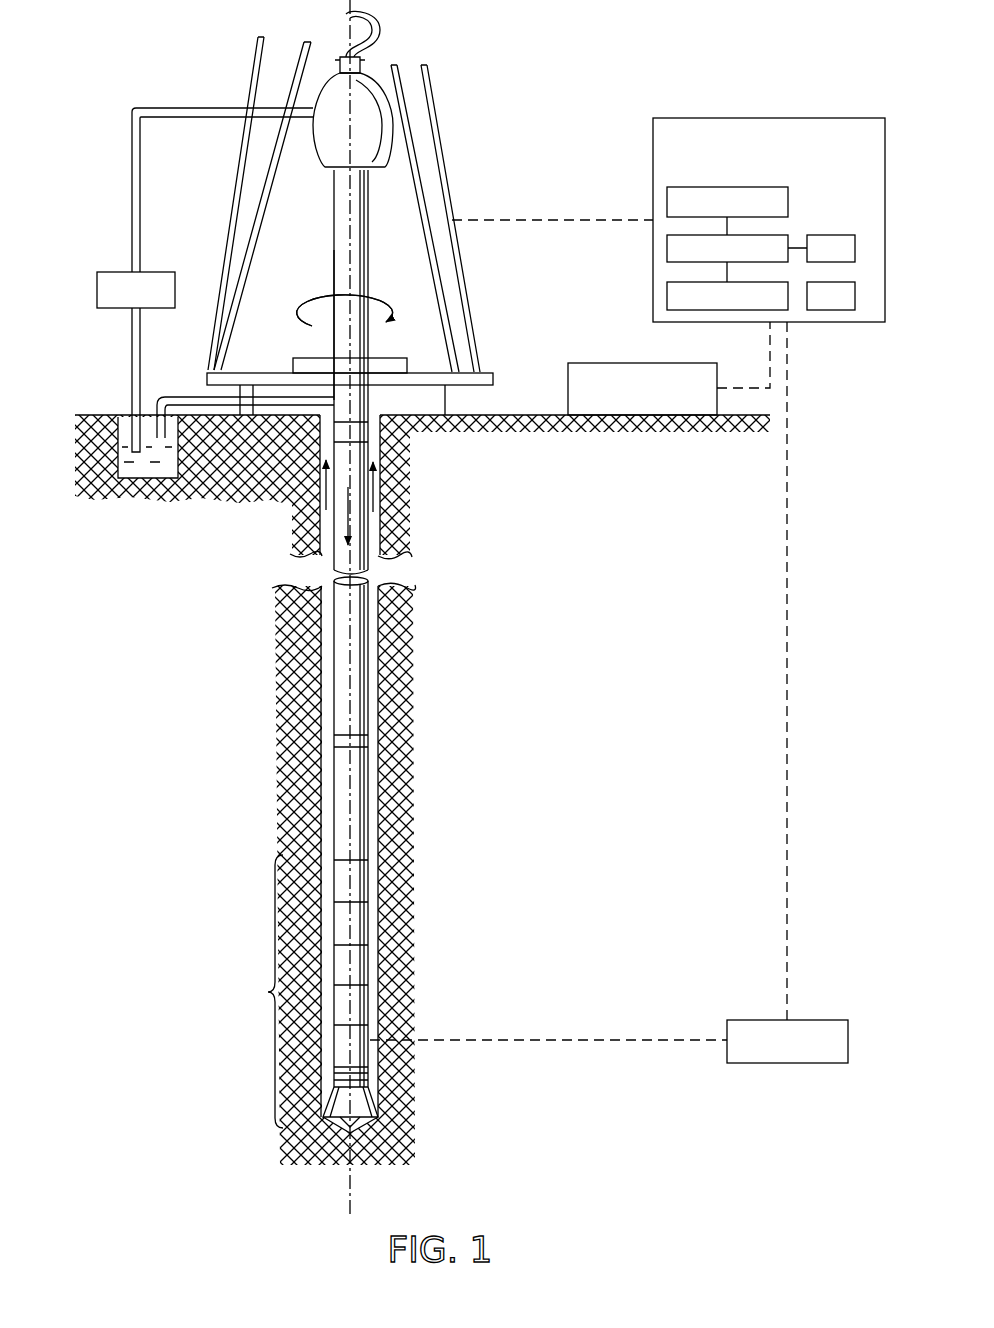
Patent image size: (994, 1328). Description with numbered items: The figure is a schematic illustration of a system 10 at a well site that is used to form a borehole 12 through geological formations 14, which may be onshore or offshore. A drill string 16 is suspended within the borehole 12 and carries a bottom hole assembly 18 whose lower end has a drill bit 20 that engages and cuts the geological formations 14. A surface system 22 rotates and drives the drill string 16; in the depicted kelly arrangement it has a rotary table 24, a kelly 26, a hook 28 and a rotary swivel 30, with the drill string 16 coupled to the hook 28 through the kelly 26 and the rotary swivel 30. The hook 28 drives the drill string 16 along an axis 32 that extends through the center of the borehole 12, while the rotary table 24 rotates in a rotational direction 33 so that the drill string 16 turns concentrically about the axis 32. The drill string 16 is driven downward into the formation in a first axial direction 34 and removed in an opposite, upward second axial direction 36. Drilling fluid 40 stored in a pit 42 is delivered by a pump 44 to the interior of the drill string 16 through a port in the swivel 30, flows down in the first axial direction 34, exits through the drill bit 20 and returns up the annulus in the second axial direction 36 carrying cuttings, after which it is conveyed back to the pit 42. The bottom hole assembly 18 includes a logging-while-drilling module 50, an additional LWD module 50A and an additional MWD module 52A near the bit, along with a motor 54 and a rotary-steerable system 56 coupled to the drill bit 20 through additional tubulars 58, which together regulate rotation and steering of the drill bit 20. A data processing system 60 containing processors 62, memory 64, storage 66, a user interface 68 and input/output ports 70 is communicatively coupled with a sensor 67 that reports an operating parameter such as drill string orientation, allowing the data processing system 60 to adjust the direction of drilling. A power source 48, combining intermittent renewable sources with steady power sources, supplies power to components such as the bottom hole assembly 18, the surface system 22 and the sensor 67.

The system 10 is at (472, 51).
The borehole 12 is at (373, 434).
The geological formations 14 is at (520, 414).
The drill string 16 is at (347, 410).
The bottom hole assembly 18 is at (259, 991).
The drill bit 20 is at (375, 1132).
The surface system 22 is at (490, 290).
The rotary table 24 is at (389, 358).
The kelly 26 is at (333, 343).
The hook 28 is at (366, 33).
The rotary swivel 30 is at (323, 165).
The axis 32 is at (352, 645).
The rotational direction 33 is at (382, 303).
The first axial direction 34 is at (336, 536).
The second axial direction 36 is at (326, 480).
The drilling fluid 40 is at (150, 470).
The pit 42 is at (123, 414).
The pump 44 is at (97, 290).
The power source 48 is at (640, 363).
The logging-while-drilling module 50 is at (356, 921).
The additional LWD module 50A is at (358, 1003).
The additional MWD module 52A is at (357, 963).
The motor 54 is at (365, 1070).
The rotary-steerable system 56 is at (360, 1090).
The additional tubulars 58 is at (372, 1100).
The data processing system 60 is at (770, 118).
The processors 62 is at (667, 249).
The memory 64 is at (667, 201).
The storage 66 is at (667, 298).
The sensor 67 is at (828, 1020).
The user interface 68 is at (843, 235).
The input/output ports 70 is at (855, 296).